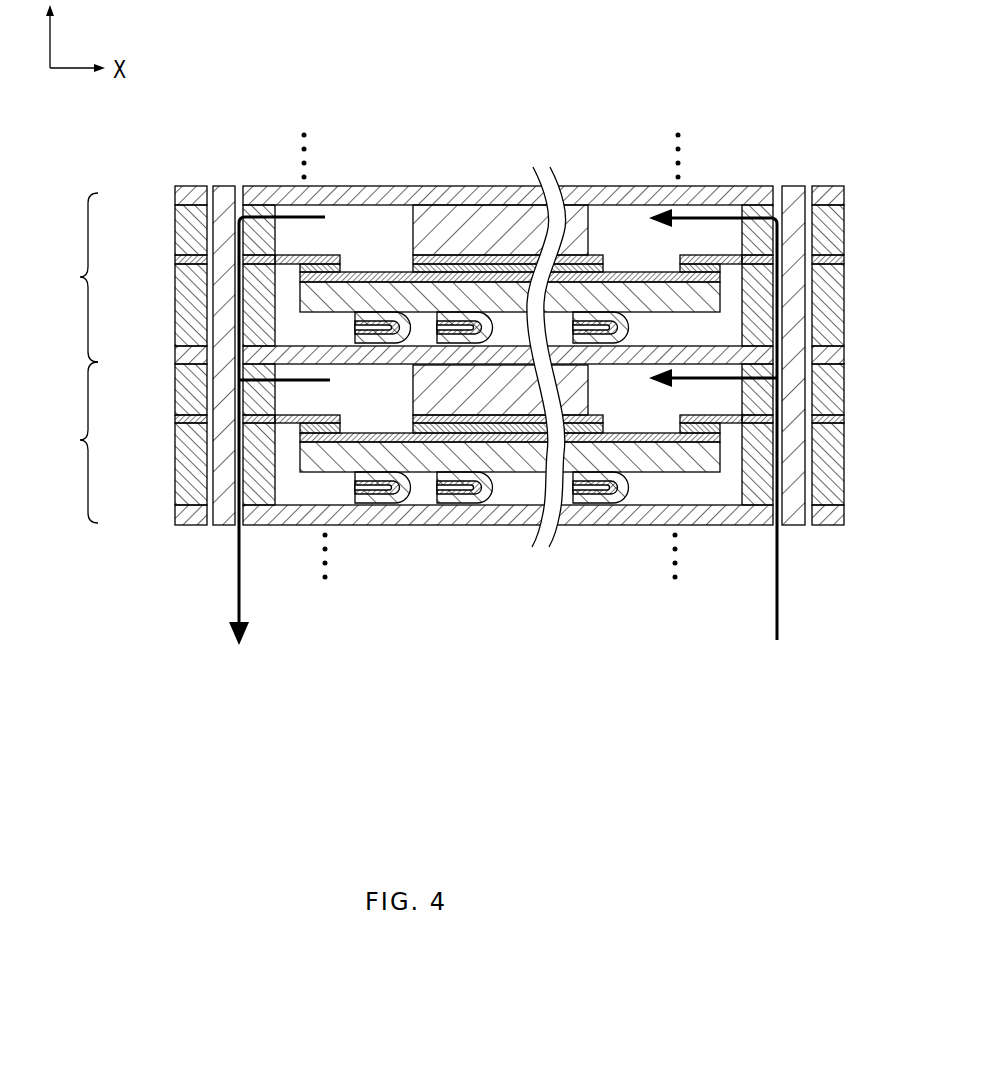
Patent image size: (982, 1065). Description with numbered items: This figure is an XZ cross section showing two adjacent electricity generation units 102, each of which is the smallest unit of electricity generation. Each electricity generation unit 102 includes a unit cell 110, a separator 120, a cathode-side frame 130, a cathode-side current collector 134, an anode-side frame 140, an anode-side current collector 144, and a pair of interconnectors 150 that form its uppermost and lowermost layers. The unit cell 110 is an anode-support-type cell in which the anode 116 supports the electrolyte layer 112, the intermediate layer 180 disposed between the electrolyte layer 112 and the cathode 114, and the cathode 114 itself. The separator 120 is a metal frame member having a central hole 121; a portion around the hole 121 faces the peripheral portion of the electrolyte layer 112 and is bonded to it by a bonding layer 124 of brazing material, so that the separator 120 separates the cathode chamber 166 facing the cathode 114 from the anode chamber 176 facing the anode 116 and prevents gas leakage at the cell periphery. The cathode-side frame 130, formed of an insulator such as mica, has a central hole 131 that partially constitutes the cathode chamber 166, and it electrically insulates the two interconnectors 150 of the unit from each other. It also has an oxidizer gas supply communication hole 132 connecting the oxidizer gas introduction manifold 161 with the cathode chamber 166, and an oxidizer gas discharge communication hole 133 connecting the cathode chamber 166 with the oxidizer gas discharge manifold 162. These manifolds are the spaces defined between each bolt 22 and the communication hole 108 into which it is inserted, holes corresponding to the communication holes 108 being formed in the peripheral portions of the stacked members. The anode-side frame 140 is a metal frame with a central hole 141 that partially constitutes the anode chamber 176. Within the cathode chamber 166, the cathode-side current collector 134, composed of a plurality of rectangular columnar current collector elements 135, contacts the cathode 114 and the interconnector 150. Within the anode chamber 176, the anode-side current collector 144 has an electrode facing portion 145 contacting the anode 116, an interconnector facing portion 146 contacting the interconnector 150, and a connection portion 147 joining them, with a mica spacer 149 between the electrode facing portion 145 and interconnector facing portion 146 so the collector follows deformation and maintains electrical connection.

The electricity generation unit 102 is at (65, 358).
The communication hole 108 is at (505, 566).
The unit cell 110 is at (510, 241).
The electrolyte layer 112 is at (388, 277).
The cathode 114 is at (417, 258).
The anode 116 is at (378, 290).
The separator 120 is at (476, 343).
The hole 121 is at (342, 418).
The bonding layer 124 is at (342, 267).
The cathode-side frame 130 is at (476, 310).
The hole 131 is at (277, 399).
The oxidizer gas supply communication hole 132 is at (755, 200).
The oxidizer gas discharge communication hole 133 is at (247, 205).
The cathode-side current collector 134 is at (533, 190).
The current collector element 135 is at (578, 222).
The anode-side frame 140 is at (476, 384).
The hole 141 is at (277, 488).
The anode-side current collector 144 is at (492, 500).
The electrode facing portion 145 is at (440, 487).
The interconnector facing portion 146 is at (448, 490).
The connection portion 147 is at (488, 500).
The spacer 149 is at (362, 505).
The interconnector 150 is at (174, 198).
The oxidizer gas introduction manifold 161 is at (807, 497).
The oxidizer gas discharge manifold 162 is at (212, 527).
The cathode chamber 166 is at (638, 405).
The anode chamber 176 is at (703, 497).
The intermediate layer 180 is at (406, 268).
The bolt 22 is at (225, 198).